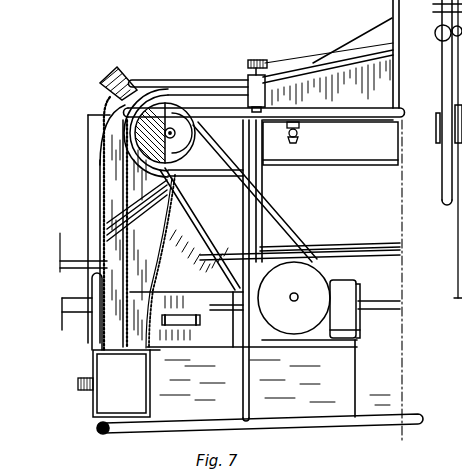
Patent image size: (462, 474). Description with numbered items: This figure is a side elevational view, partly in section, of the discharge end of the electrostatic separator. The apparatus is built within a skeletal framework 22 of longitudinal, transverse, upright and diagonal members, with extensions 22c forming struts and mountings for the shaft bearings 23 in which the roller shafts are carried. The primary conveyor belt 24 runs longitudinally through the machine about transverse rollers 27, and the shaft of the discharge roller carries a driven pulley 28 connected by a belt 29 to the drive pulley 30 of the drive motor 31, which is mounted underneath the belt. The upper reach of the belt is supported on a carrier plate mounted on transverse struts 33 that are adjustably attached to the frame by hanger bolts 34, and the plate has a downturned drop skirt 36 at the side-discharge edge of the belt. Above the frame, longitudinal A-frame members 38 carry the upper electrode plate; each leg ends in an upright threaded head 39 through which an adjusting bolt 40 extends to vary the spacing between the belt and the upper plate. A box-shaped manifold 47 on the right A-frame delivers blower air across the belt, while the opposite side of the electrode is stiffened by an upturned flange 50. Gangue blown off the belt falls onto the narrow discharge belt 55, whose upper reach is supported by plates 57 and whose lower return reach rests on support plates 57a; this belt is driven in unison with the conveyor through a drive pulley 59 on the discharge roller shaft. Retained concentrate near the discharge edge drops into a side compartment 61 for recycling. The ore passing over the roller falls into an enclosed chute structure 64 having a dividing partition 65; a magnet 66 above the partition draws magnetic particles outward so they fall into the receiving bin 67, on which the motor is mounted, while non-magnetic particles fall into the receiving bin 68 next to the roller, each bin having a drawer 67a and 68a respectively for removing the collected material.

The skeletal framework 22 is at (365, 113).
The extensions 22c is at (70, 292).
The shaft bearings 23 is at (178, 128).
The primary conveyor belt 24 is at (355, 170).
The transverse rollers 27 is at (190, 162).
The driven pulley 28 is at (196, 140).
The belt 29 is at (266, 180).
The drive pulley 30 is at (294, 298).
The drive motor 31 is at (356, 325).
The struts 33 is at (300, 128).
The hanger bolt 34 is at (296, 142).
The drop skirt 36 is at (395, 225).
The A-frame members 38 is at (357, 55).
The threaded head 39 is at (250, 76).
The adjusting bolt 40 is at (257, 60).
The manifold 47 is at (297, 52).
The upturned flange 50 is at (375, 27).
The discharge belt 55 is at (78, 261).
The plates 57 is at (75, 268).
The support plates 57a is at (396, 309).
The drive pulley 59 is at (455, 108).
The side compartment 61 is at (459, 213).
The chute structure 64 is at (102, 172).
The dividing partition 65 is at (106, 118).
The magnet 66 is at (100, 78).
The receiving bin 67 is at (141, 383).
The drawer 67a is at (100, 366).
The receiving bin 68 is at (173, 261).
The drawer 68a is at (198, 325).